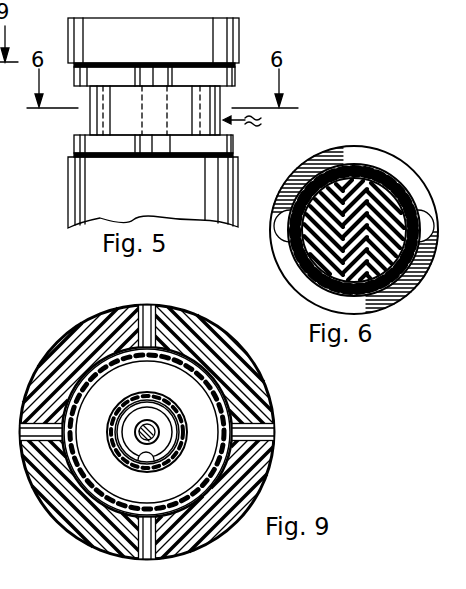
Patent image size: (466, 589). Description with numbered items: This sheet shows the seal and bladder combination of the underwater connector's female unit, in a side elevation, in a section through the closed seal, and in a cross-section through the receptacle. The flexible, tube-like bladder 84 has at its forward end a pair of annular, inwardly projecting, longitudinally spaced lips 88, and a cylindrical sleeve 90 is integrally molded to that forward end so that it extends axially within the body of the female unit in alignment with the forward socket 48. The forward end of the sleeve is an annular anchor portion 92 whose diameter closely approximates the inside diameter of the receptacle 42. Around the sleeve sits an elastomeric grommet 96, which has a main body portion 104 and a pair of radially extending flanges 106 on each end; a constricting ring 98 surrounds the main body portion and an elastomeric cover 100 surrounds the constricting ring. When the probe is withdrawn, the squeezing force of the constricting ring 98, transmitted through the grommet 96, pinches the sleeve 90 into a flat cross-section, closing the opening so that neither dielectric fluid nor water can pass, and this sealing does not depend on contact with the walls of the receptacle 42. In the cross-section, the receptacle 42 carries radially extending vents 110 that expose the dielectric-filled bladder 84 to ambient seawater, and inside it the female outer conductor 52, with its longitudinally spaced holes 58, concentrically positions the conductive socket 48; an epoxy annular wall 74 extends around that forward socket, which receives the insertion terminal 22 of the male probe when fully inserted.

In FIG. 9, the insertion terminal 22 is at (150, 437).
In FIG. 9, the receptacle 42 is at (255, 403).
In FIG. 9, the conductive socket 48 is at (146, 438).
In FIG. 9, the female outer conductor 52 is at (140, 393).
In FIG. 9, the holes 58 is at (178, 430).
In FIG. 9, the annular wall 74 is at (158, 470).
In FIG. 5, the bladder 84 is at (68, 214).
In FIG. 9, the bladder 84 is at (82, 428).
In FIG. 5, the lips 88 is at (88, 157).
In FIG. 6, the lips 88 is at (295, 278).
In FIG. 5, the cylindrical sleeve 90 is at (142, 110).
In FIG. 6, the cylindrical sleeve 90 is at (344, 195).
In FIG. 5, the anchor portion 92 is at (172, 25).
In FIG. 5, the grommet 96 is at (259, 129).
In FIG. 6, the constricting ring 98 is at (393, 265).
In FIG. 5, the elastomeric cover 100 is at (90, 115).
In FIG. 6, the elastomeric cover 100 is at (403, 187).
In FIG. 6, the main body portion 104 is at (375, 180).
In FIG. 5, the flanges 106 is at (82, 142).
In FIG. 6, the flanges 106 is at (283, 228).
In FIG. 9, the vents 110 is at (143, 312).